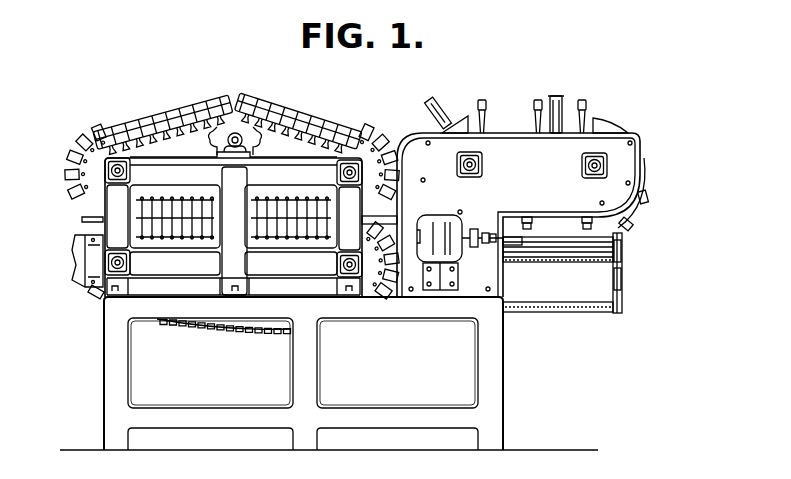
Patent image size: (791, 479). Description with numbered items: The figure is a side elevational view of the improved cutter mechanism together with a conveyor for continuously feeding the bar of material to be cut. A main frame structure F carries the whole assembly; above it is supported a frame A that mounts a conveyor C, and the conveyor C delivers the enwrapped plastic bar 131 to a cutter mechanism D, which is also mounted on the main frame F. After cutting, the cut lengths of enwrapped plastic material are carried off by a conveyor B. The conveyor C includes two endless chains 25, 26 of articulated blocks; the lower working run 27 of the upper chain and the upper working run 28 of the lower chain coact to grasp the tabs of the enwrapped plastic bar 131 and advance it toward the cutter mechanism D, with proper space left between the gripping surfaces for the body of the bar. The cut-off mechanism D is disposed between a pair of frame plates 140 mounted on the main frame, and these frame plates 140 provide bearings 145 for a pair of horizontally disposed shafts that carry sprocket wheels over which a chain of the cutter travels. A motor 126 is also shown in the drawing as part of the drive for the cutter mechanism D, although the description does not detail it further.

The frame A is at (118, 198).
The conveyor B is at (548, 264).
The conveyor C is at (258, 98).
The cutter mechanism D is at (527, 185).
The main frame structure F is at (104, 385).
The endless chain 25 is at (292, 126).
The endless chain 26 is at (247, 333).
The lower working run 27 is at (292, 203).
The upper working run 28 is at (284, 236).
The motor 126 is at (445, 230).
The enwrapped plastic bar 131 is at (395, 214).
The frame plates 140 is at (617, 168).
The bearings 145 is at (585, 163).